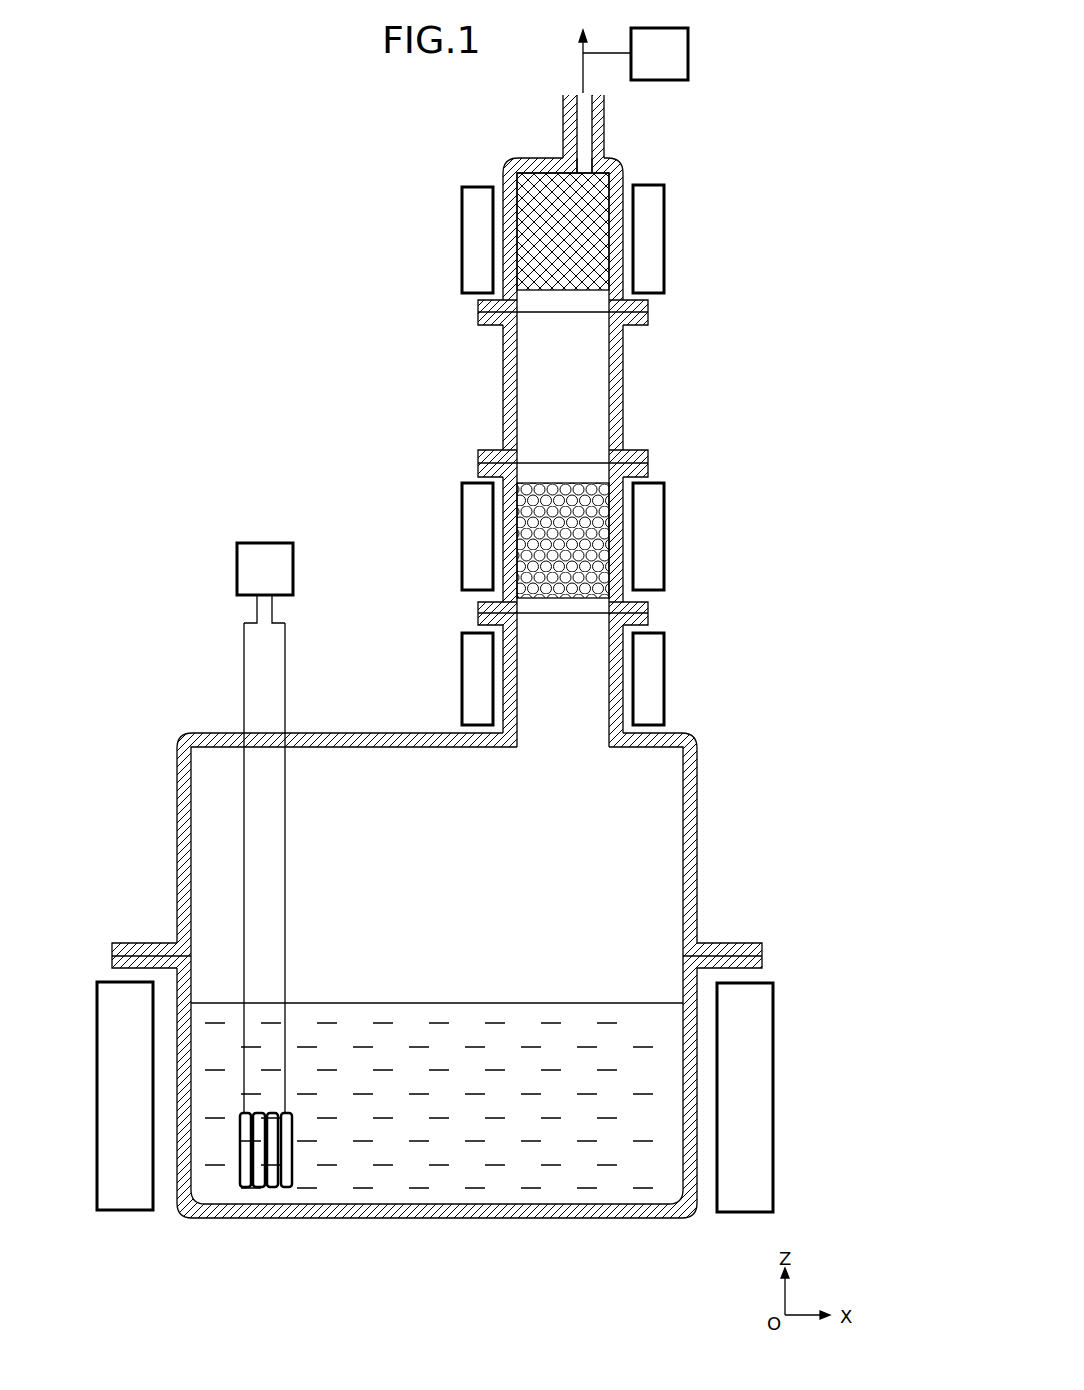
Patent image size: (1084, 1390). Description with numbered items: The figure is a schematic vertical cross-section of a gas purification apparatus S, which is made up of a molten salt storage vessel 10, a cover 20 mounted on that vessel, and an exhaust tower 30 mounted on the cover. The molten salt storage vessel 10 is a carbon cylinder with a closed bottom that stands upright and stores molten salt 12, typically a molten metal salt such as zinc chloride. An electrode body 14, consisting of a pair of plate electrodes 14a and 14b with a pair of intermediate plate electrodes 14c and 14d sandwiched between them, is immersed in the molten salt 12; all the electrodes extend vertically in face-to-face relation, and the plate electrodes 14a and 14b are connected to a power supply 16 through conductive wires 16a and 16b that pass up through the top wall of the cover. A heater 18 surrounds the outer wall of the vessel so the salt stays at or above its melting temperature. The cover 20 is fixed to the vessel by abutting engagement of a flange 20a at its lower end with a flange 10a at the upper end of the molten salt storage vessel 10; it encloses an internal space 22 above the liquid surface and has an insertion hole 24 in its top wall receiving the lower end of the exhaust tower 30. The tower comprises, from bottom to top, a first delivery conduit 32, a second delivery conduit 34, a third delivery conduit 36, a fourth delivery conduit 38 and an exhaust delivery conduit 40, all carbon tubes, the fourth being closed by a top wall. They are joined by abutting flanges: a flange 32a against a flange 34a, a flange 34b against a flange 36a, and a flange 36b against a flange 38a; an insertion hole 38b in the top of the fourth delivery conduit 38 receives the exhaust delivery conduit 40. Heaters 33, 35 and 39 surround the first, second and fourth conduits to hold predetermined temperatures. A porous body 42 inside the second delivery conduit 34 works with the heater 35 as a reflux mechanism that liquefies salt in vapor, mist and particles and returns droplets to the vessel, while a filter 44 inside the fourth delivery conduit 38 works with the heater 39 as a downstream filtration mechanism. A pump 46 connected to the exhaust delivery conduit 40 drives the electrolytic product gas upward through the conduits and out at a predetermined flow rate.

The molten salt storage vessel 10 is at (629, 1212).
The flange 10a is at (762, 969).
The molten salt 12 is at (548, 1008).
The electrode body 14 is at (272, 1220).
The plate electrode 14a is at (245, 1190).
The plate electrode 14b is at (312, 1187).
The intermediate plate electrode 14c is at (259, 1190).
The intermediate plate electrode 14d is at (272, 1190).
The power supply 16 is at (250, 550).
The conductive wire 16a is at (243, 655).
The conductive wire 16b is at (286, 655).
The heater 18 is at (775, 1016).
The cover 20 is at (697, 873).
The flange 20a is at (745, 955).
The internal space 22 is at (665, 841).
The insertion hole 24 is at (605, 748).
The exhaust tower 30 is at (778, 352).
The first delivery conduit 32 is at (505, 652).
The flange 32a is at (645, 629).
The heater 33 is at (653, 707).
The second delivery conduit 34 is at (507, 498).
The flange 34a is at (640, 603).
The flange 34b is at (645, 471).
The heater 35 is at (653, 578).
The third delivery conduit 36 is at (623, 390).
The flange 36a is at (645, 454).
The flange 36b is at (645, 322).
The fourth delivery conduit 38 is at (502, 208).
The flange 38a is at (642, 299).
The insertion hole 38b is at (565, 157).
The heater 39 is at (653, 217).
The exhaust delivery conduit 40 is at (604, 128).
The porous body 42 is at (622, 496).
The filter 44 is at (612, 248).
The pump 46 is at (688, 78).
The gas purification apparatus S is at (336, 424).